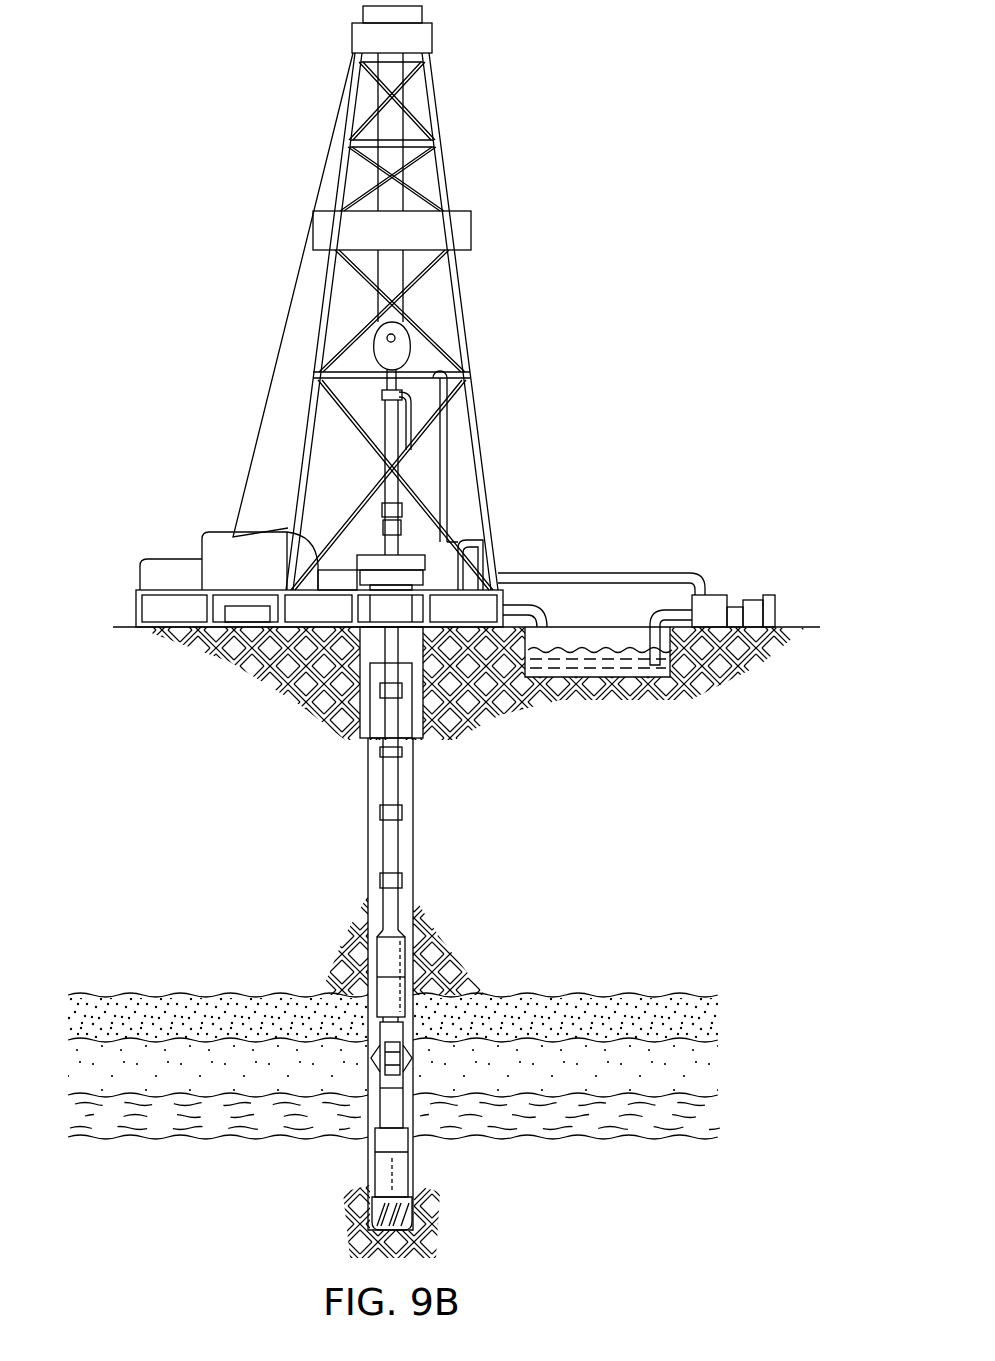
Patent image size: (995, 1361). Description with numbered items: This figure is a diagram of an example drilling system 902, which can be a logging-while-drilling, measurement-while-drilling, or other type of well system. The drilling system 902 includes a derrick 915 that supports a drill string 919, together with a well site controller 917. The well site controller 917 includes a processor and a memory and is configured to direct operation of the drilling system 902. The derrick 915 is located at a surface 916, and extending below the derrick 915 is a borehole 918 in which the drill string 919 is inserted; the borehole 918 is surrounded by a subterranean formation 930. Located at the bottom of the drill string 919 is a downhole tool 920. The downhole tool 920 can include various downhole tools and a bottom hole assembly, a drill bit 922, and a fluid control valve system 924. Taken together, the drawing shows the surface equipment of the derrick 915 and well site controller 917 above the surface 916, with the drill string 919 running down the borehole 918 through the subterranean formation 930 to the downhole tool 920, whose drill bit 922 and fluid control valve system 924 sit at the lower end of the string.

The drilling system 902 is at (168, 110).
The derrick 915 is at (479, 402).
The surface 916 is at (799, 627).
The well site controller 917 is at (247, 614).
The borehole 918 is at (369, 829).
The drill string 919 is at (402, 850).
The downhole tool 920 is at (508, 1118).
The drill bit 922 is at (370, 1206).
The fluid control valve system 924 is at (398, 1142).
The subterranean formation 930 is at (726, 1074).